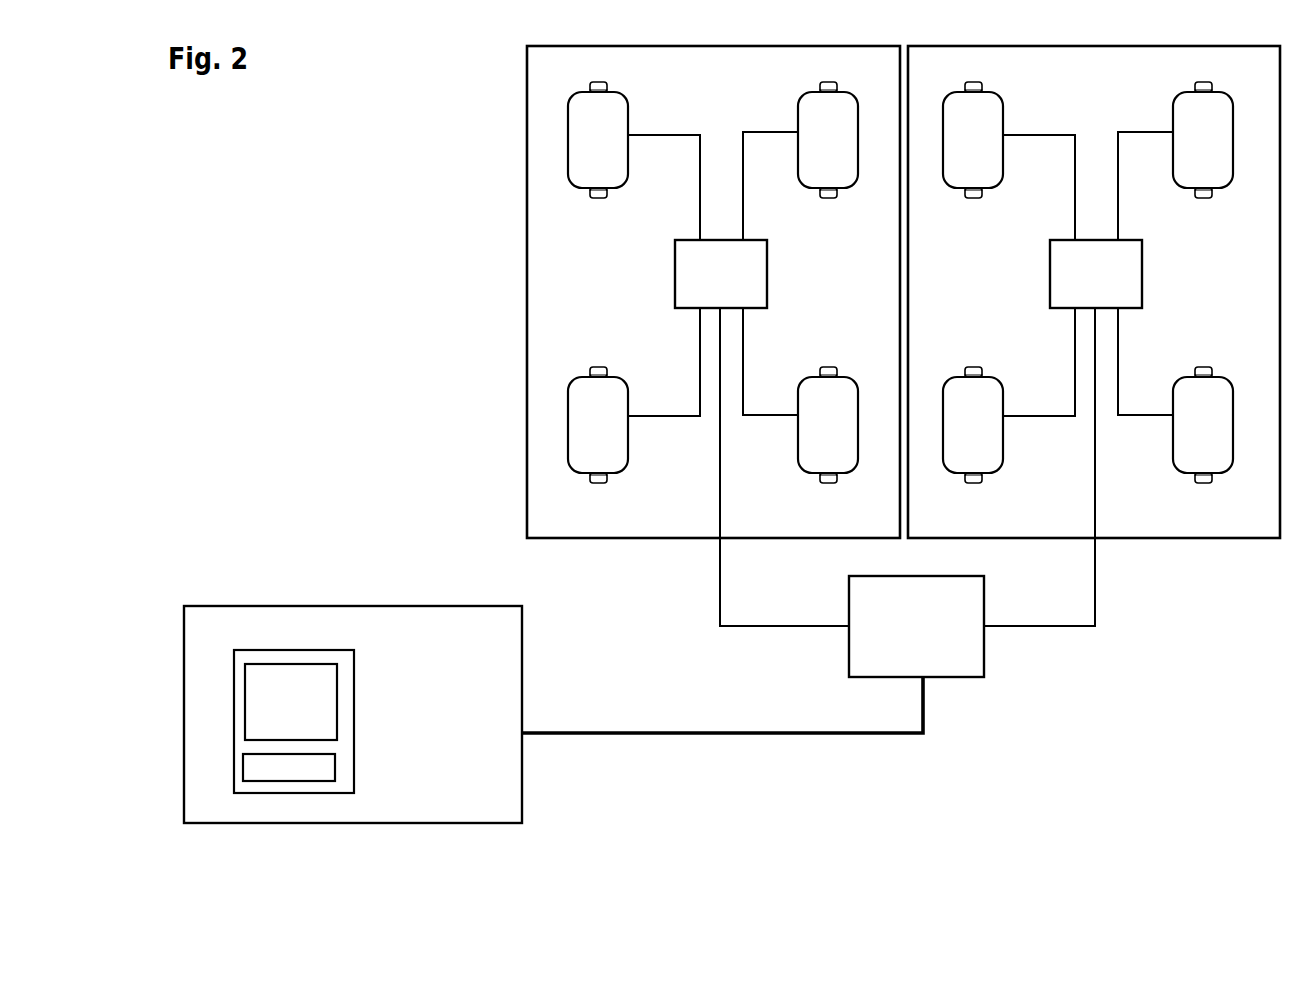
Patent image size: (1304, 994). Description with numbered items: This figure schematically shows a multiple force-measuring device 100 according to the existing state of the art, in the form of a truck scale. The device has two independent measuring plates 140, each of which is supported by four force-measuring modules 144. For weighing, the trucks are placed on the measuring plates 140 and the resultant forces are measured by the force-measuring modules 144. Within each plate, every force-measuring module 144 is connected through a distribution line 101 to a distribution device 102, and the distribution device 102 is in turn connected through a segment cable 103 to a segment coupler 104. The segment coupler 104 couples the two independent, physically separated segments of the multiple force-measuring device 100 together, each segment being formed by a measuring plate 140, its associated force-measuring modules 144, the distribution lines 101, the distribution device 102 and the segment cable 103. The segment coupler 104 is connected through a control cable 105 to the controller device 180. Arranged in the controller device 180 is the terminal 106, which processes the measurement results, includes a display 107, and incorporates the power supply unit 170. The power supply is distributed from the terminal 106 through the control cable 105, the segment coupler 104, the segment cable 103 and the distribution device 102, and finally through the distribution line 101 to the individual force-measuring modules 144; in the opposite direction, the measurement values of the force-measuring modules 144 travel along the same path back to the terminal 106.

The multiple force-measuring device 100 is at (1238, 780).
The distribution line 101 is at (700, 197).
The distribution device 102 is at (1075, 288).
The segment cable 103 is at (1053, 627).
The segment coupler 104 is at (927, 642).
The control cable 105 is at (795, 737).
The terminal 106 is at (285, 648).
The display 107 is at (310, 698).
The measuring plate 140 is at (1247, 525).
The force-measuring module 144 is at (1191, 443).
The power supply unit 170 is at (320, 765).
The controller device 180 is at (210, 603).